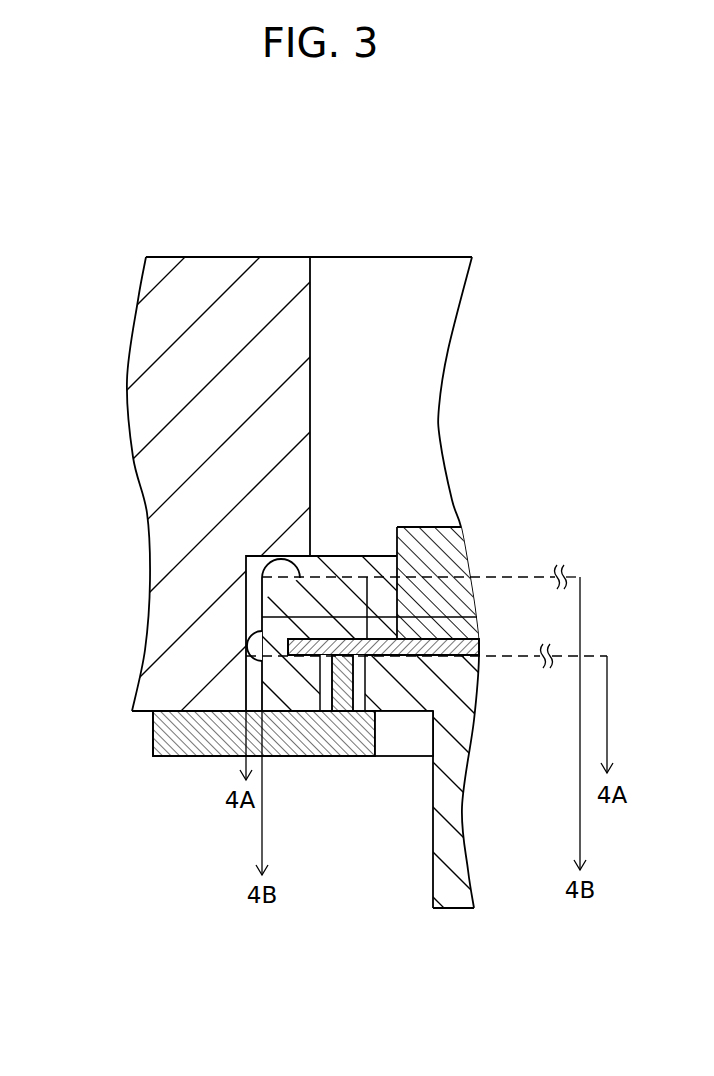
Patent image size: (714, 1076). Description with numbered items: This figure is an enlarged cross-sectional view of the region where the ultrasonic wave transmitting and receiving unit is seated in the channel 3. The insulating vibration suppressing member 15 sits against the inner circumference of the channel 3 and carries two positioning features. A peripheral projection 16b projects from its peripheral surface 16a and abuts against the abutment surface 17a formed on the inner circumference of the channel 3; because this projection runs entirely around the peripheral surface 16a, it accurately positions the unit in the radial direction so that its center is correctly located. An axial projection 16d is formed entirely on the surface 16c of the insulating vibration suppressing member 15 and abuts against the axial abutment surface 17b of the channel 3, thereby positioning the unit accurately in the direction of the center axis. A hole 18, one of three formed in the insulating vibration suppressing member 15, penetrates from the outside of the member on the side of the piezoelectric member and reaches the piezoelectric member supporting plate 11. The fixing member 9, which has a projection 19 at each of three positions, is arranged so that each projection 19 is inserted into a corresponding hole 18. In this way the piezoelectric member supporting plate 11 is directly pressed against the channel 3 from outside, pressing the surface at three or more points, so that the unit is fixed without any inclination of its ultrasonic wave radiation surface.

The channel 3 is at (210, 257).
The fixing member 9 is at (162, 757).
The piezoelectric member supporting plate 11 is at (460, 720).
The insulating vibration suppressing member 15 is at (400, 712).
The peripheral surface 16a is at (258, 683).
The peripheral projection 16b is at (247, 633).
The surface 16c is at (357, 577).
The axial projection 16d is at (306, 556).
The abutment surface 17a is at (477, 620).
The axial abutment surface 17b is at (252, 553).
The hole 18 is at (320, 688).
The projection 19 is at (334, 706).